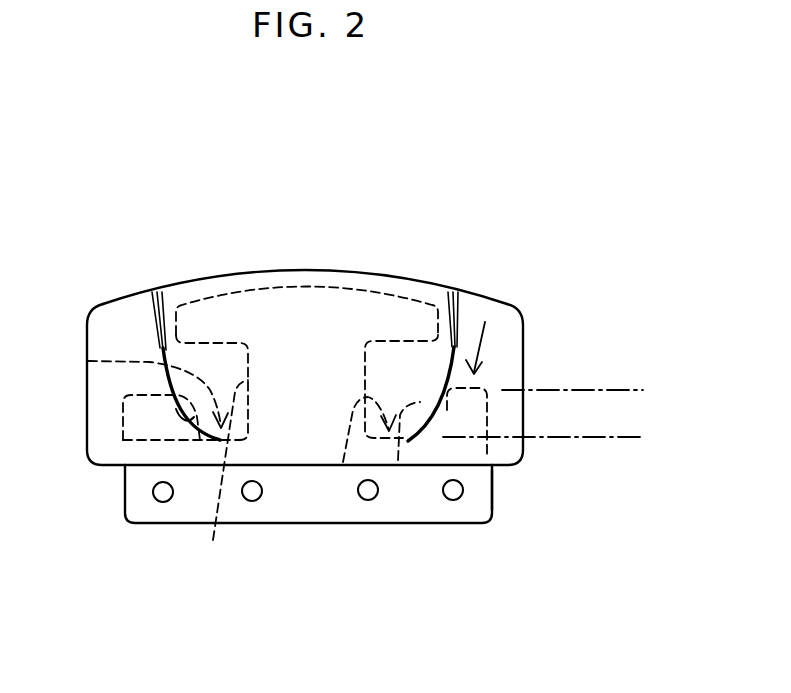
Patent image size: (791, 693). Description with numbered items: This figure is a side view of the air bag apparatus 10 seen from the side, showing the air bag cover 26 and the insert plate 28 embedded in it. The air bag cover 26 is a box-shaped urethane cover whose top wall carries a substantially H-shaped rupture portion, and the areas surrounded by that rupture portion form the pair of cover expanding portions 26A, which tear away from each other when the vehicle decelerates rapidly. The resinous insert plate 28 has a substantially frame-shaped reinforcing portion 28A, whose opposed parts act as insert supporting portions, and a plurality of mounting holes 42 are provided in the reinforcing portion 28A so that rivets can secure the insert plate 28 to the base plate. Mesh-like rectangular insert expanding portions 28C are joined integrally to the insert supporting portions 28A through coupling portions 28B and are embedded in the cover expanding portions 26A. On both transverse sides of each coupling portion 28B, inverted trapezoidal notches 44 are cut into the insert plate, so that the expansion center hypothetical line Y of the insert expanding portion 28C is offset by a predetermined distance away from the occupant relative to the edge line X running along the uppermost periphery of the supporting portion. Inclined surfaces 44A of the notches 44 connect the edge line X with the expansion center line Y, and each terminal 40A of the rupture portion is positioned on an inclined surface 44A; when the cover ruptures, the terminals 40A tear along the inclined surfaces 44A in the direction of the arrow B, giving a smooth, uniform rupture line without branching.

The air bag device 10 is at (161, 255).
The air bag cover 26 is at (414, 280).
The cover expanding portion 26A is at (322, 270).
The insert plate 28 is at (425, 526).
The reinforcing portion 28A is at (493, 492).
The coupling portion 28B is at (222, 477).
The insert expanding portion 28C is at (246, 290).
The terminal of rupture portion 40A is at (158, 333).
The mounting hole 42 is at (161, 495).
The notch 44 is at (88, 361).
The inclined surface 44A is at (131, 440).
The rupture direction arrow B is at (492, 346).
The edge line X is at (620, 390).
The expansion center hypothetical line Y is at (618, 437).